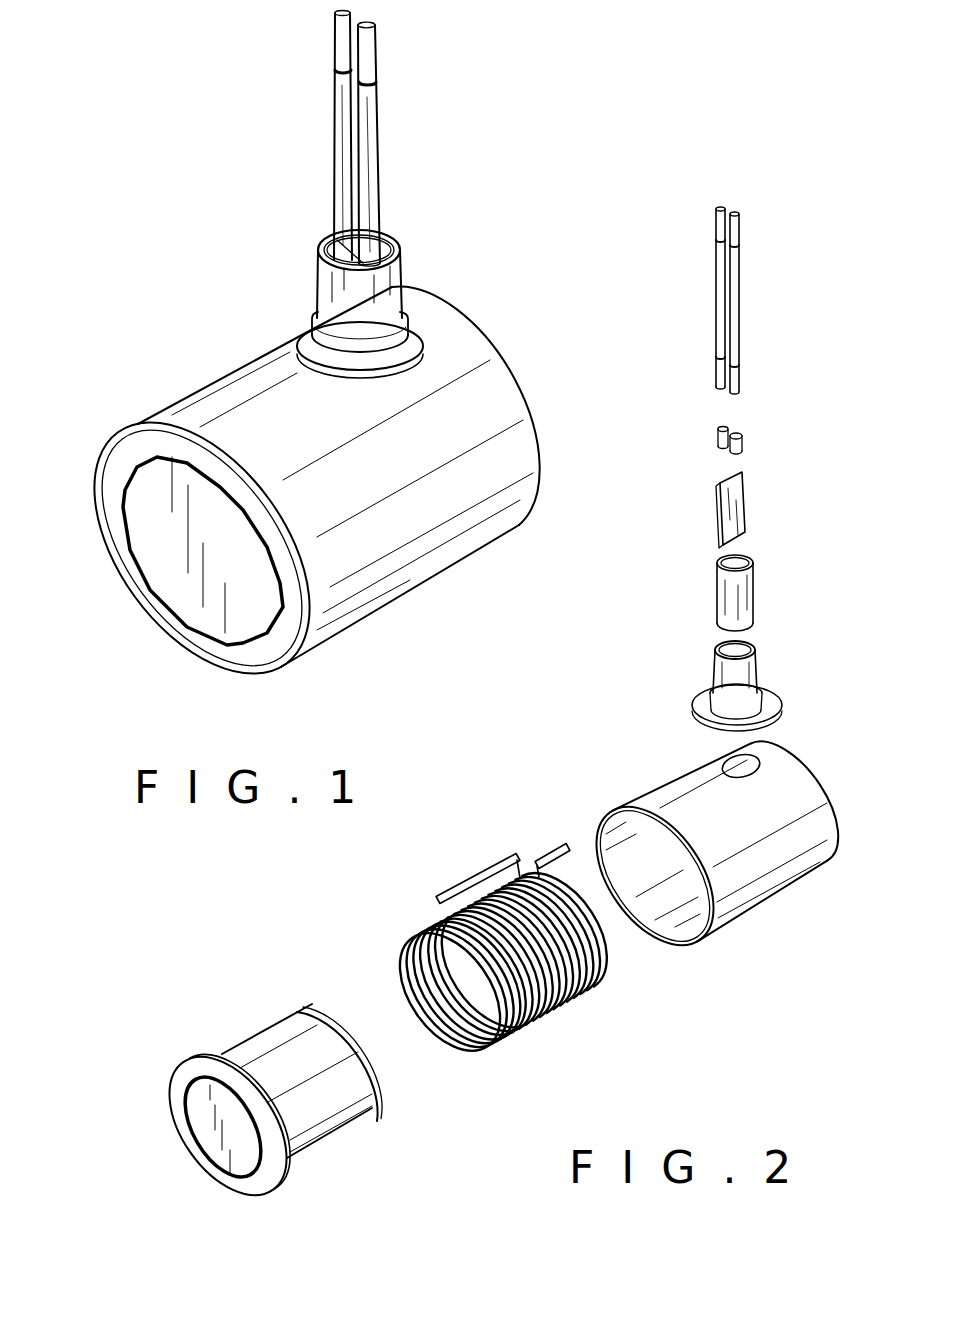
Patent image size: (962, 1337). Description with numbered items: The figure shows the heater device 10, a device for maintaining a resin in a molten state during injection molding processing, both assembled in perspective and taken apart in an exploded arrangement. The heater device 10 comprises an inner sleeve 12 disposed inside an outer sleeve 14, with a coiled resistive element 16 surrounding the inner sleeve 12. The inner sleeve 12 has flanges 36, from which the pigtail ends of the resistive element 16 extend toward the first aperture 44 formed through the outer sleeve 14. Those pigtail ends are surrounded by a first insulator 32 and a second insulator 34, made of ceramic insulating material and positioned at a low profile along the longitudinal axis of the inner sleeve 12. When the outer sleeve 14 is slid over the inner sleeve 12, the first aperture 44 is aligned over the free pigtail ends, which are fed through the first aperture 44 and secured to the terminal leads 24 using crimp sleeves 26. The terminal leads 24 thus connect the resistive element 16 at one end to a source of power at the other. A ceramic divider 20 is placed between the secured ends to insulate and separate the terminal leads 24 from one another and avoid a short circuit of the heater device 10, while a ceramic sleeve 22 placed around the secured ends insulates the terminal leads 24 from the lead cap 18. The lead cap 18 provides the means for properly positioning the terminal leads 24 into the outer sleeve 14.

In FIG. 1, the heater device 10 is at (447, 226).
In FIG. 2, the heater device 10 is at (267, 1205).
In FIG. 1, the inner sleeve 12 is at (150, 505).
In FIG. 2, the inner sleeve 12 is at (246, 1035).
In FIG. 1, the outer sleeve 14 is at (423, 587).
In FIG. 2, the outer sleeve 14 is at (680, 766).
In FIG. 2, the coiled resistive element 16 is at (440, 930).
In FIG. 1, the lead cap 18 is at (338, 290).
In FIG. 2, the lead cap 18 is at (755, 668).
In FIG. 2, the ceramic divider 20 is at (740, 512).
In FIG. 2, the ceramic sleeve 22 is at (743, 593).
In FIG. 1, the terminal leads 24 is at (334, 133).
In FIG. 2, the terminal leads 24 is at (716, 303).
In FIG. 2, the crimp sleeves 26 is at (717, 437).
In FIG. 2, the first insulator 32 is at (467, 877).
In FIG. 2, the second insulator 34 is at (552, 847).
In FIG. 1, the flanges 36 is at (298, 580).
In FIG. 2, the first aperture 44 is at (757, 767).